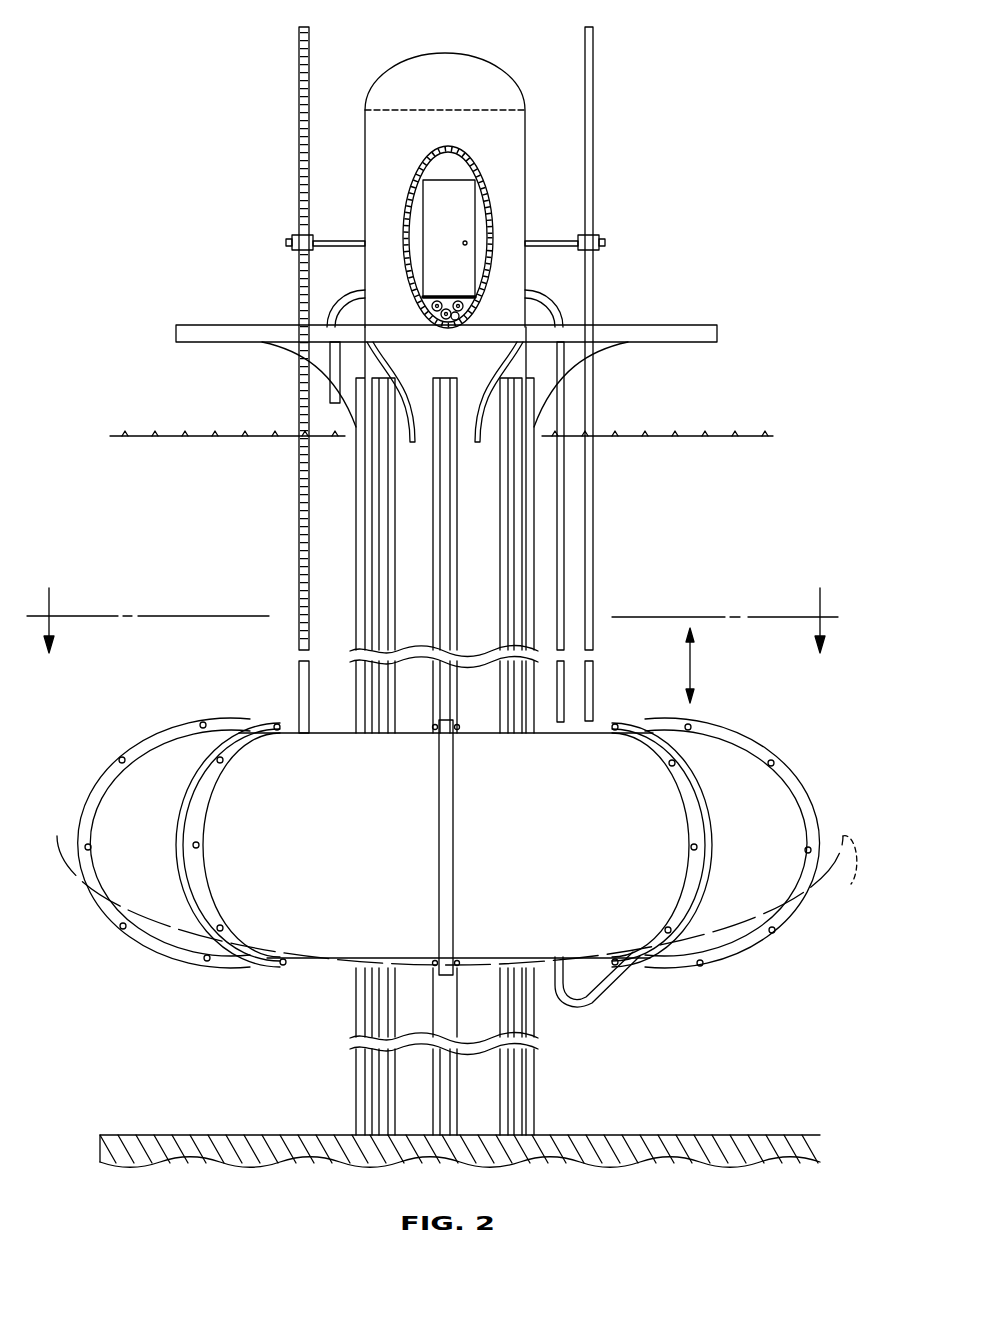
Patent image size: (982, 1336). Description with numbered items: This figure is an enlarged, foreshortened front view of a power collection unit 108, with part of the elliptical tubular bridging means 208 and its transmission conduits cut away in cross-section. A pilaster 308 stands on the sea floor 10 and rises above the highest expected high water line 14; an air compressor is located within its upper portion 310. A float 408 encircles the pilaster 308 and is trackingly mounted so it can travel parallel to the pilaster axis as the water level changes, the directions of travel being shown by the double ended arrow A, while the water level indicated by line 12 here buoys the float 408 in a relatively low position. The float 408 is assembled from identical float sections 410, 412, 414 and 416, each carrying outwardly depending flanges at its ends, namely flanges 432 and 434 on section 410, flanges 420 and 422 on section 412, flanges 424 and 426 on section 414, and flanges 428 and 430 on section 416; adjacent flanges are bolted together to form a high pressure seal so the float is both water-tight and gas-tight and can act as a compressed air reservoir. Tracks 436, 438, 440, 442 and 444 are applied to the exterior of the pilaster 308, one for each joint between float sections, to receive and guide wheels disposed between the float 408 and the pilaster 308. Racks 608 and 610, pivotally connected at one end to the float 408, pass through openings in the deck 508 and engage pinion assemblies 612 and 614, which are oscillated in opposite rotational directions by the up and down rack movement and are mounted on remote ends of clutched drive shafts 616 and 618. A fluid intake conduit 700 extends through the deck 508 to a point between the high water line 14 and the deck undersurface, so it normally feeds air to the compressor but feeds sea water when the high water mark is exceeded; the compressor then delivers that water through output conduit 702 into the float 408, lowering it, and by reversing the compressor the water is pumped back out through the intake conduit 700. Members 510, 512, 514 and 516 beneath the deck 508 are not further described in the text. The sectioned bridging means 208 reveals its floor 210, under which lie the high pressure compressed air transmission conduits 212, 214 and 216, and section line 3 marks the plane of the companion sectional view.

The sea floor 10 is at (262, 1133).
The water level line 12 is at (459, 900).
The expected high water line 14 is at (181, 434).
The upper capsule assembly 108 is at (656, 256).
The bridging means 208 is at (470, 158).
The floor 210 is at (468, 302).
The high pressure compressed air transmission conduit 212 is at (430, 305).
The high pressure compressed air transmission conduit 214 is at (432, 319).
The high pressure compressed air transmission conduit 216 is at (474, 316).
The pilaster 308 is at (410, 1068).
The capsule 310 is at (418, 64).
The float 408 is at (754, 716).
The float section 410 is at (135, 760).
The float section 412 is at (288, 930).
The float section 414 is at (566, 1003).
The float section 416 is at (741, 932).
The outwardly depending flange 420 is at (238, 942).
The outwardly depending flange 422 is at (440, 906).
The outwardly depending flange 424 is at (452, 906).
The outwardly depending flange 426 is at (646, 947).
The outwardly depending flange 428 is at (694, 920).
The outwardly depending flange 430 is at (793, 910).
The outwardly depending flange 432 is at (198, 922).
The outwardly depending flange 434 is at (193, 721).
The track 436 is at (364, 509).
The track 438 is at (388, 556).
The track 440 is at (441, 455).
The track 442 is at (502, 538).
The track 444 is at (538, 541).
The deck 508 is at (618, 326).
The right brace 510 is at (601, 346).
The right conduit 512 is at (480, 372).
The left conduit 514 is at (408, 354).
The left brace 516 is at (283, 344).
The rack 608 is at (594, 572).
The rack 610 is at (300, 462).
The pinion assembly 612 is at (602, 237).
The pinion assembly 614 is at (291, 239).
The clutched drive shaft 616 is at (540, 241).
The clutched drive shaft 618 is at (358, 241).
The fluid intake conduit 700 is at (339, 314).
The output conduit 702 is at (566, 491).
The section line 3- 3 is at (432, 608).
The double ended arrow A is at (698, 665).